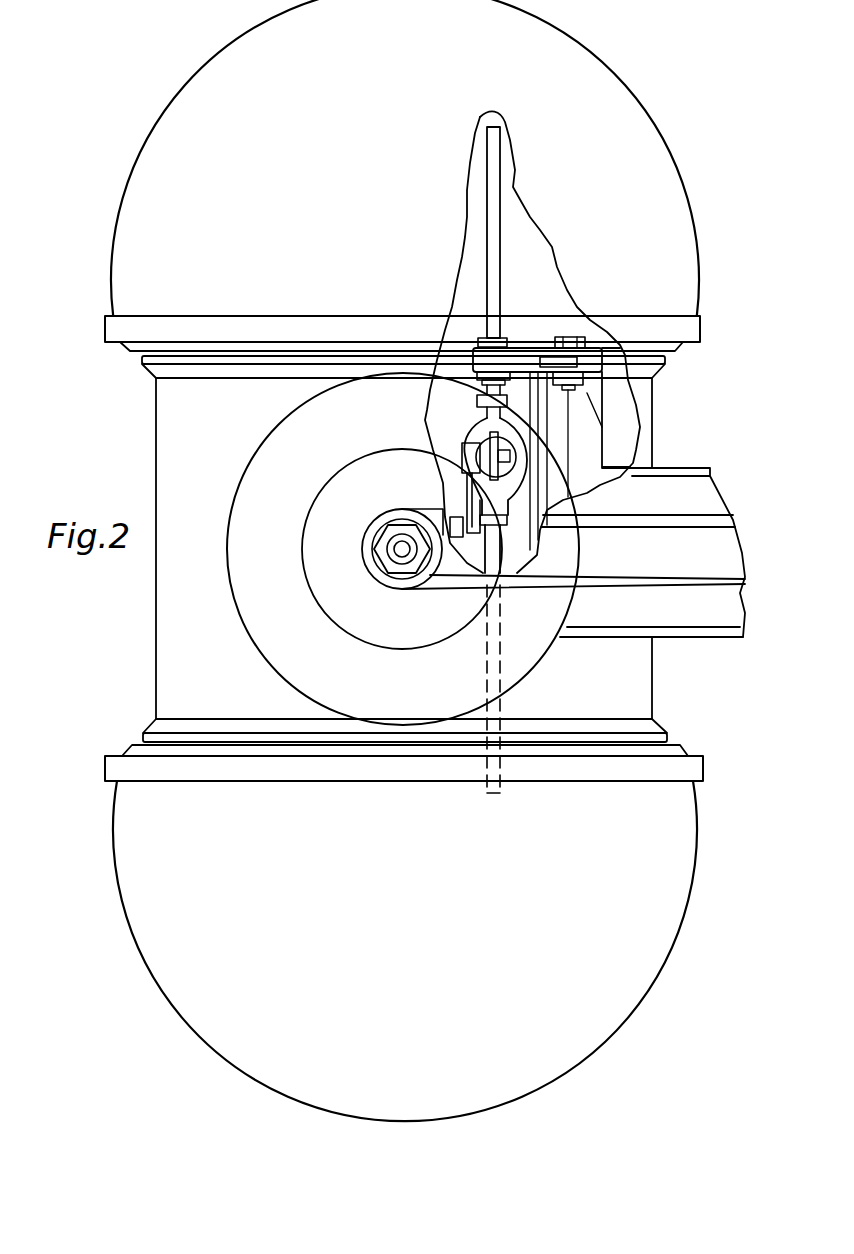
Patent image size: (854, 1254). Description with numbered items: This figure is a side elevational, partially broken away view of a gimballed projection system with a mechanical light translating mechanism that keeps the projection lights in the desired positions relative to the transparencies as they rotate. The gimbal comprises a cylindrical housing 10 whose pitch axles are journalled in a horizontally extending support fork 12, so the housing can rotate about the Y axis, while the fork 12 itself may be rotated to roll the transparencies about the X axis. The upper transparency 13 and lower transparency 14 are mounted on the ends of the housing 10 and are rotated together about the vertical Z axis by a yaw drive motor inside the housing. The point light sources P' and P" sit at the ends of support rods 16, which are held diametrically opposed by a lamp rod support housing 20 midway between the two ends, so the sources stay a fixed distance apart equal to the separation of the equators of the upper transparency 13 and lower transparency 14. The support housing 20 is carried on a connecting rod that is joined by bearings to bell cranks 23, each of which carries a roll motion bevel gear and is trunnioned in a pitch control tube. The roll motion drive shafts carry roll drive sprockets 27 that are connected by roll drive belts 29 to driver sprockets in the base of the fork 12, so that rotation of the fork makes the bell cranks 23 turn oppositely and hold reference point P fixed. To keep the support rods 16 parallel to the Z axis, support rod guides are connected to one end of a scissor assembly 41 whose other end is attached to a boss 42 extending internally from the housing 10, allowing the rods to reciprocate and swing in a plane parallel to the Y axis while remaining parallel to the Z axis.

The cylindrical housing 10 is at (653, 398).
The support fork 12 is at (675, 467).
The upper transparency 13 is at (646, 108).
The lower transparency 14 is at (650, 993).
The support rod 16 is at (502, 280).
The lamp rod support housing 20 is at (478, 426).
The bell crank 23 is at (462, 487).
The roll drive sprocket 27 is at (364, 536).
The roll drive belt 29 is at (627, 588).
The scissor assembly 41 is at (534, 346).
The boss 42 is at (592, 338).